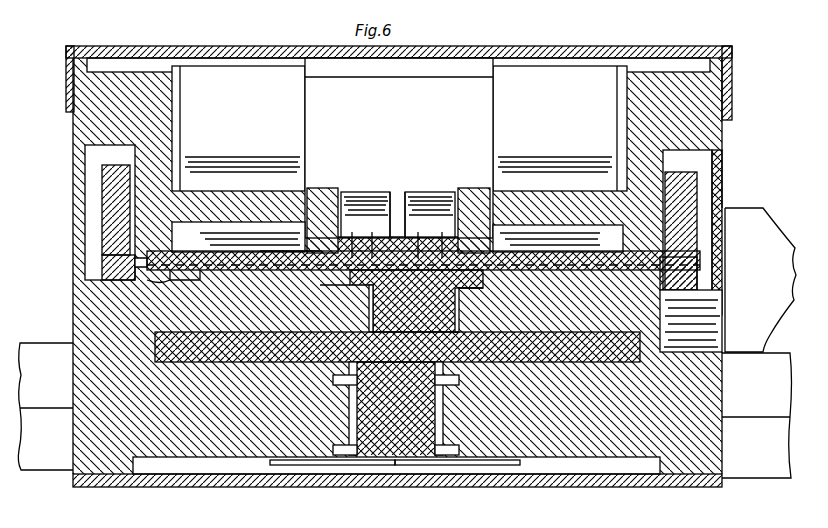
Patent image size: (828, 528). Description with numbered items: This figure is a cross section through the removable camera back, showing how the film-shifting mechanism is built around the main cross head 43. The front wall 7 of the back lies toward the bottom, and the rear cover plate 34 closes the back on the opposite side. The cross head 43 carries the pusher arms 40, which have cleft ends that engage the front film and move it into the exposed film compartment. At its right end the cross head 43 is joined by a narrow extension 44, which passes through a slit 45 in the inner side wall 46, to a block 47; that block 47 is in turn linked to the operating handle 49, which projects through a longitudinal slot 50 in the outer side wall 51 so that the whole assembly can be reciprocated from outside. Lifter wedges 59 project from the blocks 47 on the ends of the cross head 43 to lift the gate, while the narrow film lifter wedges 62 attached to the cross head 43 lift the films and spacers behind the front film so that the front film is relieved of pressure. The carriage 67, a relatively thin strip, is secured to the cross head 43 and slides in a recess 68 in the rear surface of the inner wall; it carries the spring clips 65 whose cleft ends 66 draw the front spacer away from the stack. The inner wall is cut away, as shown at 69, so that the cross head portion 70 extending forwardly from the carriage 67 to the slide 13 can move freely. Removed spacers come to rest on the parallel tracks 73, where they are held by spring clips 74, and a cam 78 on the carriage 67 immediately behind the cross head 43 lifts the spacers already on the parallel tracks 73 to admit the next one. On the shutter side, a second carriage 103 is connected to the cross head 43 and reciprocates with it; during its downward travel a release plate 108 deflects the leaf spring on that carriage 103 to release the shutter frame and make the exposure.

The front wall 7 is at (512, 487).
The slide 13 is at (160, 350).
The rear cover plate 34 is at (645, 44).
The pusher arms 40 is at (205, 270).
The cross head 43 is at (282, 258).
The narrow extension 44 is at (140, 264).
The slit 45 is at (135, 248).
The inner side wall 46 is at (691, 345).
The block 47 is at (115, 235).
The operating handle 49 is at (764, 226).
The longitudinal slot 50 is at (720, 320).
The outer side wall 51 is at (727, 373).
The lifter wedges 59 is at (102, 175).
The film lifter wedges 62 is at (150, 280).
The spring clips 65 is at (396, 214).
The cleft ends 66 is at (370, 192).
The carriage 67 is at (368, 262).
The recess 68 is at (350, 262).
The cut away portion 69 is at (460, 295).
The cross head portion 70 is at (412, 305).
The parallel tracks 73 is at (284, 203).
The spring clips 74 is at (300, 148).
The cam 78 is at (322, 192).
The carriage 103 is at (450, 470).
The release plate 108 is at (343, 470).